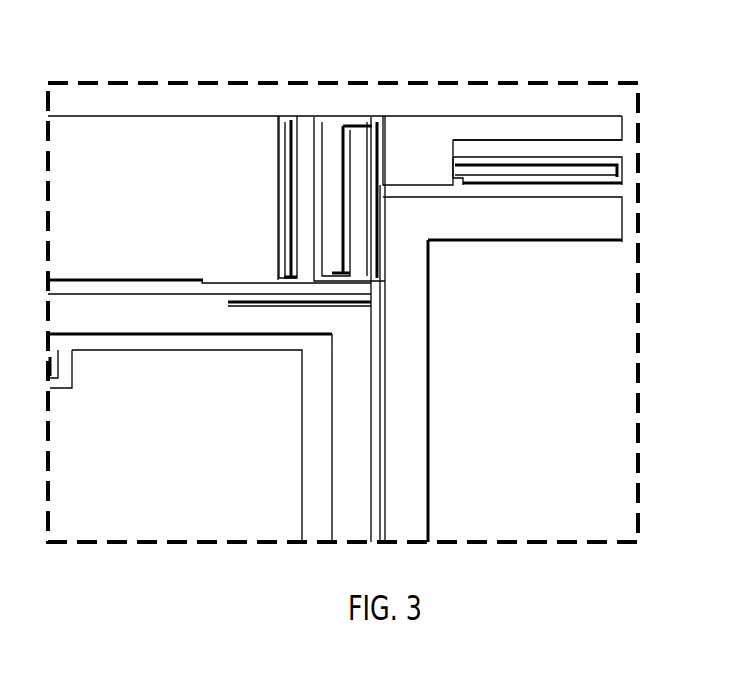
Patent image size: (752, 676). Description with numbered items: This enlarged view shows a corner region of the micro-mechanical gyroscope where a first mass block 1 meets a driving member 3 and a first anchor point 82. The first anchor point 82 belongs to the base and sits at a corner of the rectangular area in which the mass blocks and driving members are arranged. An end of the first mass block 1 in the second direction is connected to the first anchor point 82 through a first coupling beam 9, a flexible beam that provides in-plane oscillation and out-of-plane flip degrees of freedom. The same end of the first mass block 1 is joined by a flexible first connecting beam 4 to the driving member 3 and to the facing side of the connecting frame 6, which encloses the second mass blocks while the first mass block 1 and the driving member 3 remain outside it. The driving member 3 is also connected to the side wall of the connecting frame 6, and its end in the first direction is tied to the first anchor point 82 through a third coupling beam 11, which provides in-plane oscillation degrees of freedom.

The first mass block 1 is at (125, 146).
The first coupling beam 9 is at (297, 116).
The first anchor point 82 is at (413, 147).
The third coupling beam 11 is at (620, 175).
The first connecting beam 4 is at (371, 293).
The driving member 3 is at (417, 388).
The connecting frame 6 is at (343, 458).